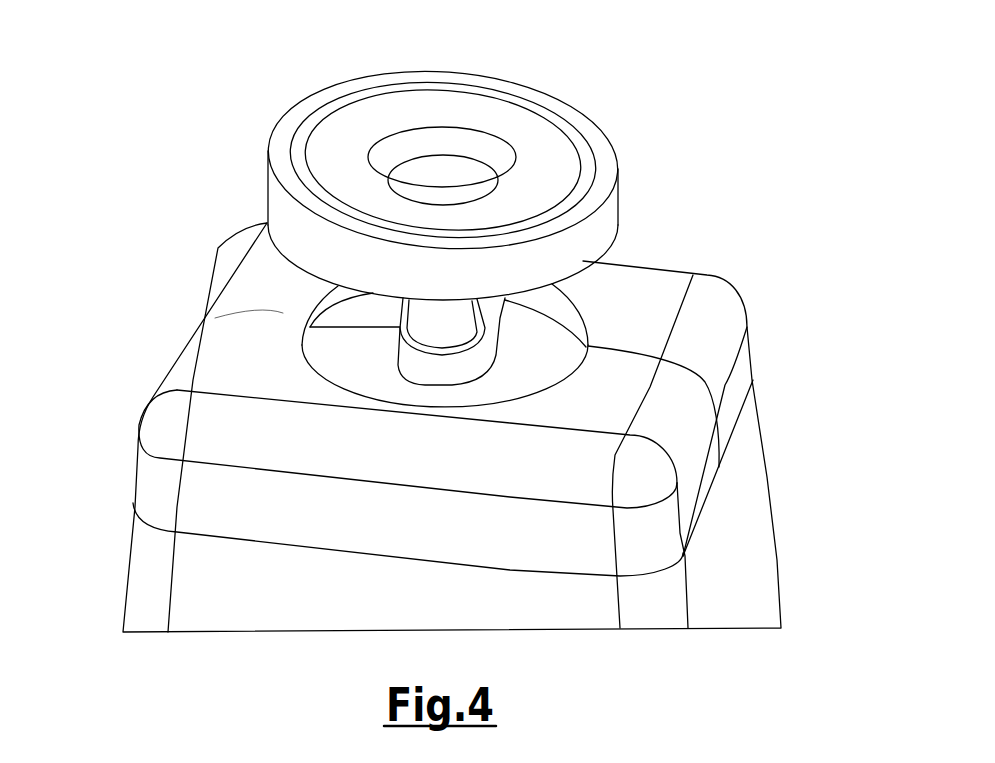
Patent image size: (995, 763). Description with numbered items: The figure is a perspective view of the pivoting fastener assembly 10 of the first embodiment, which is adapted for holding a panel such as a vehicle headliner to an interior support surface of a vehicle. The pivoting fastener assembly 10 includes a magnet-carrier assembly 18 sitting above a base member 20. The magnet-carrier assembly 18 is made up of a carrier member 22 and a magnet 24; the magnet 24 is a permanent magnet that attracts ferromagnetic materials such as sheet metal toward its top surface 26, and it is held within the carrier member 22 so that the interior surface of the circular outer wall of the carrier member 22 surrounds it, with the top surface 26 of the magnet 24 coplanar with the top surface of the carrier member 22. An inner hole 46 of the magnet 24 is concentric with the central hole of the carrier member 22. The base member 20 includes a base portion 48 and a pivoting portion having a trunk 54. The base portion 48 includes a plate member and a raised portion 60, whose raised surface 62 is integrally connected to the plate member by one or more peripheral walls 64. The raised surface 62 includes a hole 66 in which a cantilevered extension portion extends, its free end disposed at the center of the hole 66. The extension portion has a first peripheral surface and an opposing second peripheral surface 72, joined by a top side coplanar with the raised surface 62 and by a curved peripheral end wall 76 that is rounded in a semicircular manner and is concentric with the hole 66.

The pivoting fastener assembly 10 is at (660, 73).
The magnet-carrier assembly 18 is at (568, 68).
The base member 20 is at (674, 199).
The carrier member 22 is at (318, 98).
The magnet 24 is at (472, 103).
The top surface of the magnet 26 is at (360, 117).
The inner hole of the magnet 46 is at (403, 145).
The base portion 48 is at (726, 321).
The trunk 54 is at (484, 318).
The raised portion 60 is at (213, 322).
The raised surface 62 is at (254, 293).
The peripheral walls 64 is at (771, 478).
The hole 66 is at (342, 360).
The second peripheral surface 72 is at (494, 336).
The peripheral end wall 76 is at (427, 376).